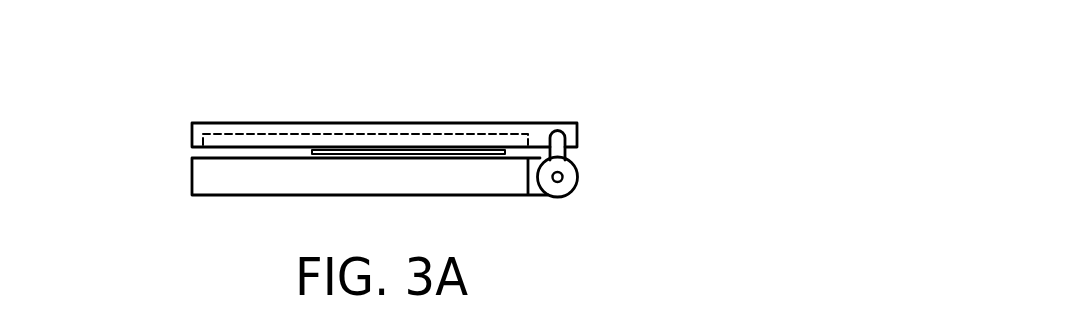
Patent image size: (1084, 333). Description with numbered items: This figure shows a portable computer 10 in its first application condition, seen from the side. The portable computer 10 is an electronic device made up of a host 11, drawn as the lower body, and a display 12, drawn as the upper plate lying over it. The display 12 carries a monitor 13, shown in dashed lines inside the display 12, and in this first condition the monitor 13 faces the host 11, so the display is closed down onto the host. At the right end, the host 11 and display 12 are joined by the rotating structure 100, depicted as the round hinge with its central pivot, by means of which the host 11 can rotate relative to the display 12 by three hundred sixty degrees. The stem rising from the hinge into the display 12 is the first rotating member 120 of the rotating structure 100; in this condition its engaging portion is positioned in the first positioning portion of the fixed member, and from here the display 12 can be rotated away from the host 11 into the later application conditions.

The portable computer 10 is at (102, 39).
The host 11 is at (215, 178).
The display 12 is at (540, 132).
The monitor 13 is at (330, 133).
The rotating structure 100 is at (579, 187).
The first rotating member 120 is at (576, 158).